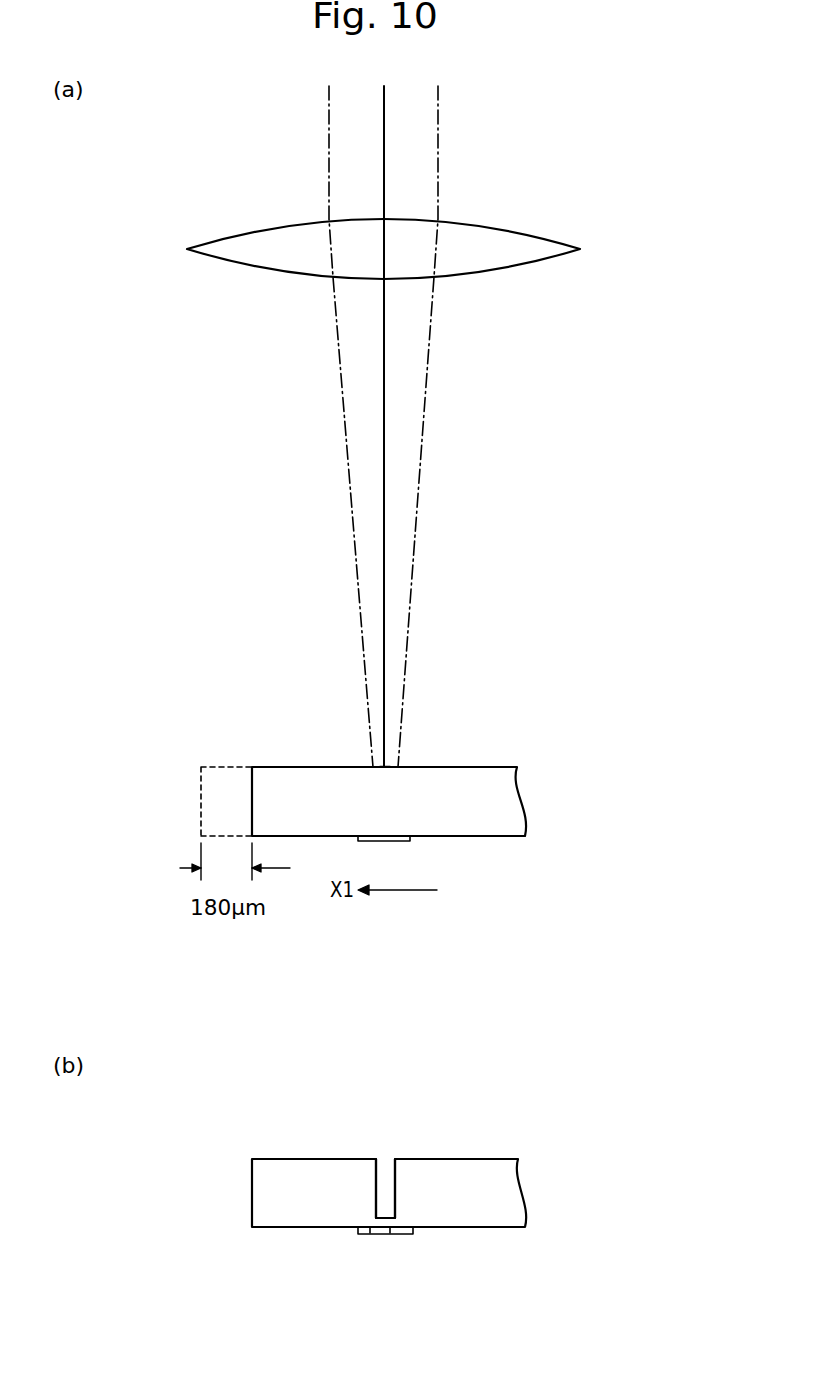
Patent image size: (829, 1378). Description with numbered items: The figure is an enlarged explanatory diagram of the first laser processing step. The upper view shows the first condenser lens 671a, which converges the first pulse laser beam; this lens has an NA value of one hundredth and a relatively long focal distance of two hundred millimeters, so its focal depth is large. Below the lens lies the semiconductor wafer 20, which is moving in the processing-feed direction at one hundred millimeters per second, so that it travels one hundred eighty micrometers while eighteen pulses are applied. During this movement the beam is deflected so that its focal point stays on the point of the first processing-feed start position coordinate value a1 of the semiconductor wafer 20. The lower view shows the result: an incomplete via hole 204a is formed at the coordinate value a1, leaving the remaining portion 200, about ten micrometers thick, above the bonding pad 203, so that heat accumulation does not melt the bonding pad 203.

The first condenser lens 671a is at (535, 247).
The semiconductor wafer 20 is at (480, 767).
The bonding pad 203 is at (345, 1272).
The remaining portion 200 is at (388, 1233).
The incomplete via hole 204a is at (382, 1172).
The first processing-feed start position coordinate value a1 is at (398, 765).